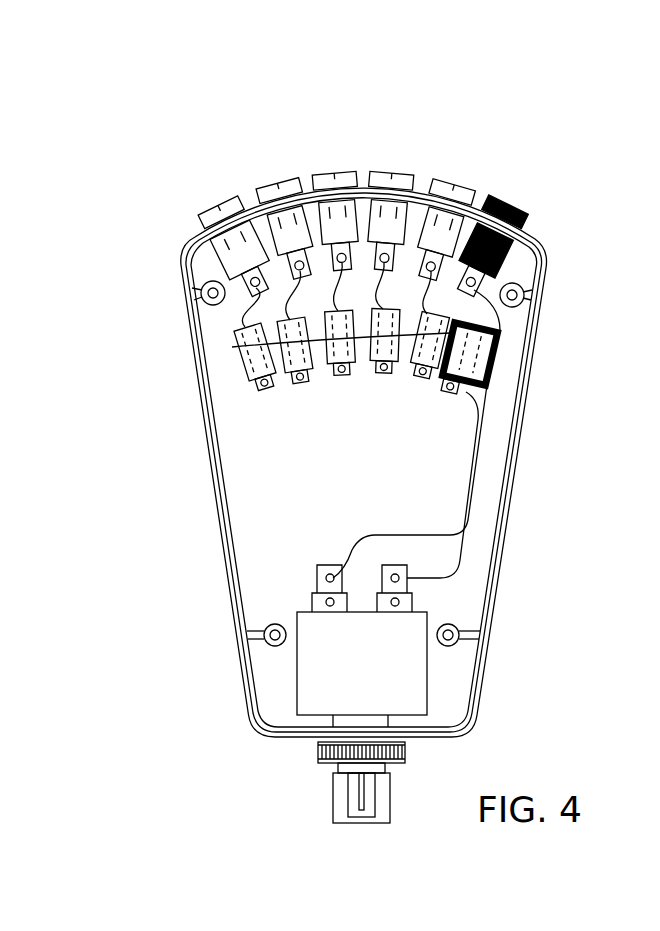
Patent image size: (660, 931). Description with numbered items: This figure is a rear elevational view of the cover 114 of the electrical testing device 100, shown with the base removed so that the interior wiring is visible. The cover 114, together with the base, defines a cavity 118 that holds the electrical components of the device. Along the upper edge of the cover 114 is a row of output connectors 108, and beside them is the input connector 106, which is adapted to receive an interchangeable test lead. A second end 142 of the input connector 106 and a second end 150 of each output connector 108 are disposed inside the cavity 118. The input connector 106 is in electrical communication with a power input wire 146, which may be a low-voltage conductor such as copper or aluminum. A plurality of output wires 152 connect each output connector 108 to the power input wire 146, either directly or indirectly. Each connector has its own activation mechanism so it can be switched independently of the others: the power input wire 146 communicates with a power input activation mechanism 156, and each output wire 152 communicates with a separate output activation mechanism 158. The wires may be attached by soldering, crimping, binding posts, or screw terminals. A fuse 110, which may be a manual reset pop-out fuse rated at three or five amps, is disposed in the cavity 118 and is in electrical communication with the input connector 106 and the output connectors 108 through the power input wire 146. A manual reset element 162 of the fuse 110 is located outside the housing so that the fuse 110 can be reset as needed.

The electrical testing device 100 is at (548, 85).
The input connector 106 is at (508, 203).
The plurality of output connectors 108 is at (218, 205).
The fuse 110 is at (320, 677).
The cover 114 is at (512, 490).
The cavity 118 is at (272, 478).
The second end of the input connector 142 is at (540, 265).
The power input wire 146 is at (527, 293).
The second end of each output connector 150 is at (220, 262).
The plurality of output wires 152 is at (240, 317).
The power input activation mechanism 156 is at (473, 397).
The output activation mechanism 158 is at (400, 380).
The manual reset element 162 is at (335, 795).